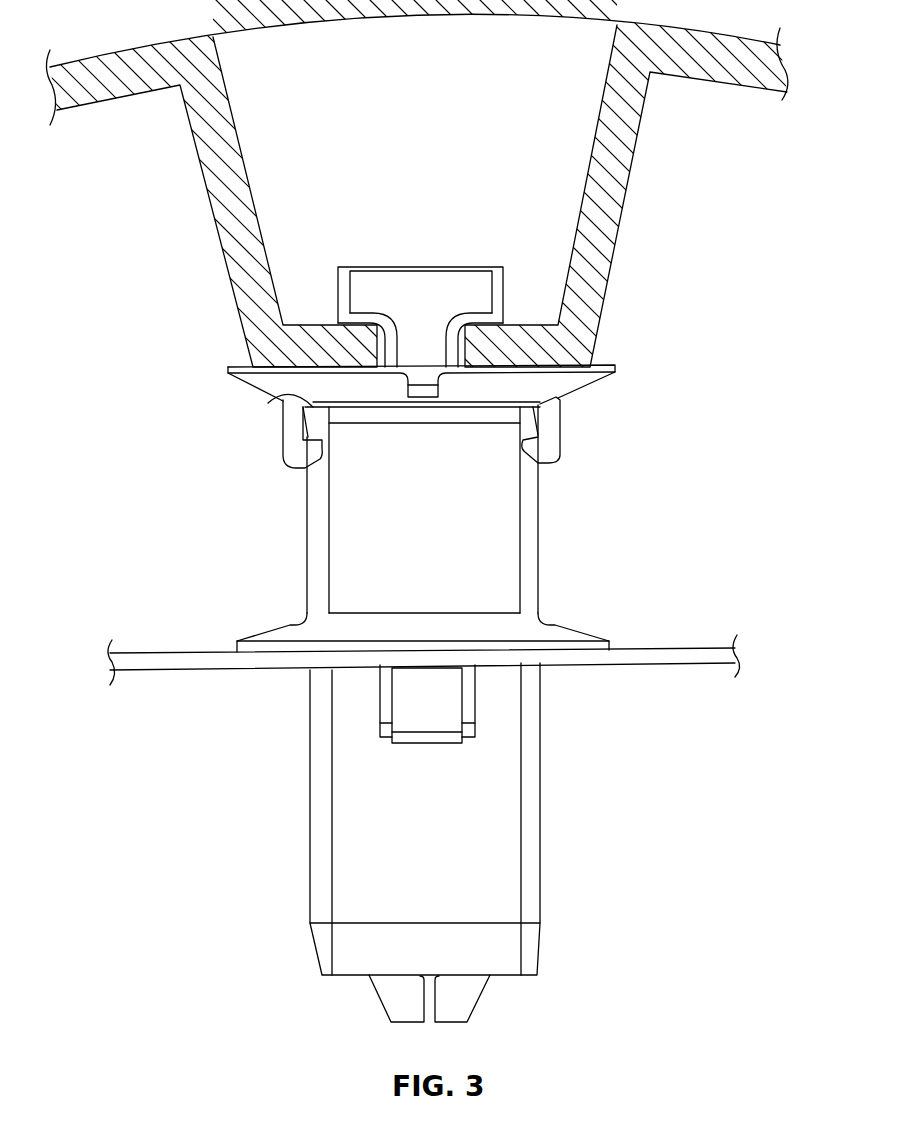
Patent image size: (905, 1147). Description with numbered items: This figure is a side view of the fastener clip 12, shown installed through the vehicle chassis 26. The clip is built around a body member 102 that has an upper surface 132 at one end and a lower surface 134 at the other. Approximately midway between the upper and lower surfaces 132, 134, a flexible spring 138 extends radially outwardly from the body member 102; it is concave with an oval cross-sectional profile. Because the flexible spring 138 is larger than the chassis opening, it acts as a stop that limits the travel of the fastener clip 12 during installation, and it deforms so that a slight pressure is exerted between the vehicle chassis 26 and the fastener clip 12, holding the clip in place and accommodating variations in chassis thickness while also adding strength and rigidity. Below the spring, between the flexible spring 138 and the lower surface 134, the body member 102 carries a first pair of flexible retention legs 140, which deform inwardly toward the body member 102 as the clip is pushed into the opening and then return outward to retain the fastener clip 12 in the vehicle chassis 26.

The fastener clip 12 is at (687, 356).
The upper surface 132 is at (284, 392).
The flexible spring 138 is at (609, 640).
The vehicle chassis 26 is at (703, 652).
The first pair of flexible retention legs 140 is at (443, 707).
The body member 102 is at (542, 790).
The lower surface 134 is at (528, 975).